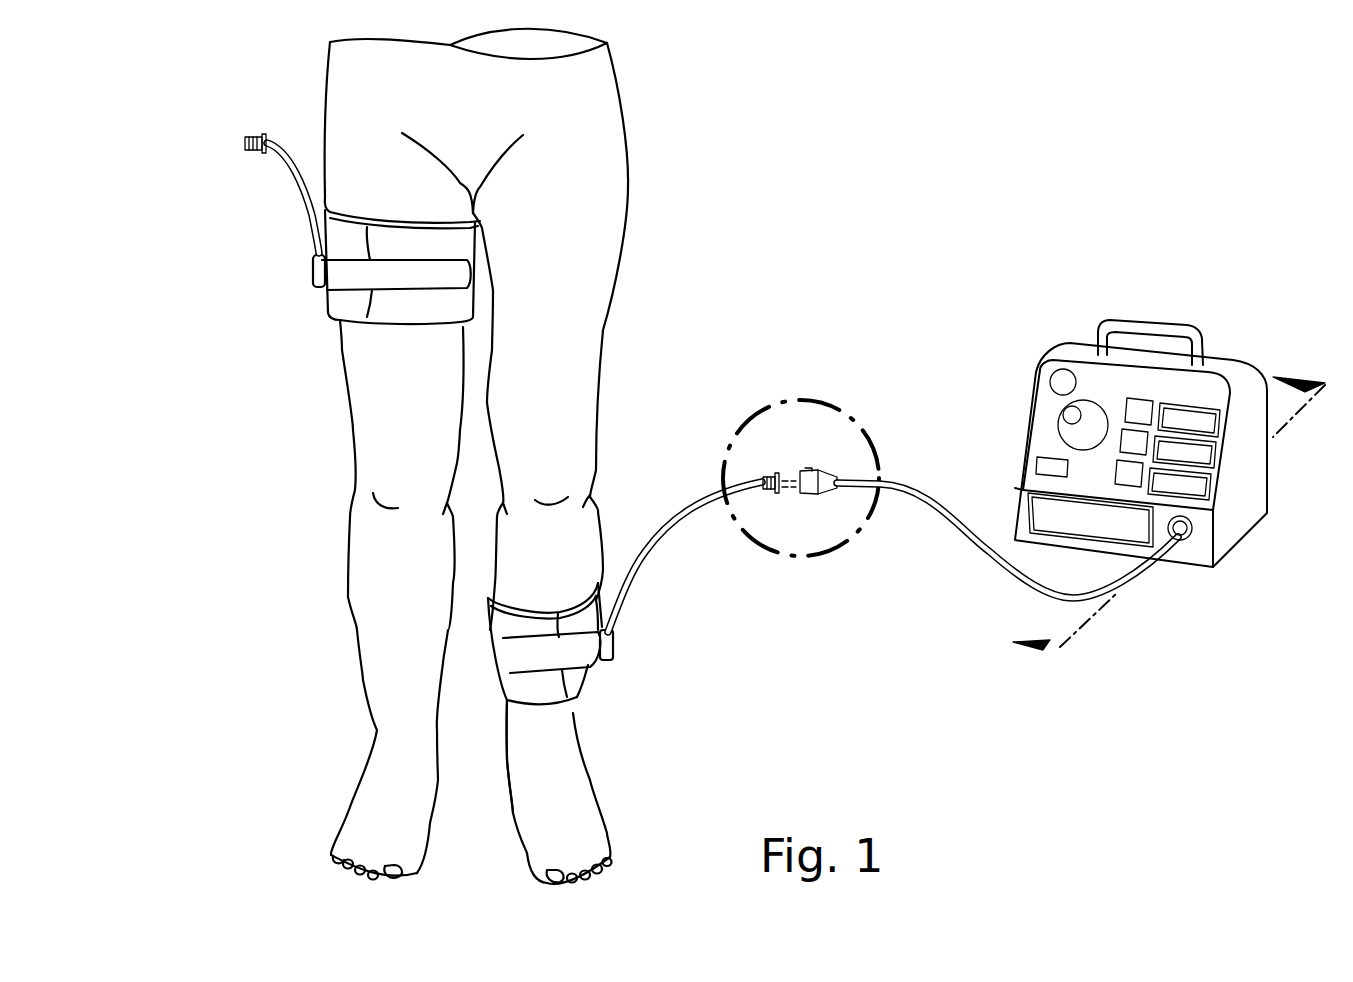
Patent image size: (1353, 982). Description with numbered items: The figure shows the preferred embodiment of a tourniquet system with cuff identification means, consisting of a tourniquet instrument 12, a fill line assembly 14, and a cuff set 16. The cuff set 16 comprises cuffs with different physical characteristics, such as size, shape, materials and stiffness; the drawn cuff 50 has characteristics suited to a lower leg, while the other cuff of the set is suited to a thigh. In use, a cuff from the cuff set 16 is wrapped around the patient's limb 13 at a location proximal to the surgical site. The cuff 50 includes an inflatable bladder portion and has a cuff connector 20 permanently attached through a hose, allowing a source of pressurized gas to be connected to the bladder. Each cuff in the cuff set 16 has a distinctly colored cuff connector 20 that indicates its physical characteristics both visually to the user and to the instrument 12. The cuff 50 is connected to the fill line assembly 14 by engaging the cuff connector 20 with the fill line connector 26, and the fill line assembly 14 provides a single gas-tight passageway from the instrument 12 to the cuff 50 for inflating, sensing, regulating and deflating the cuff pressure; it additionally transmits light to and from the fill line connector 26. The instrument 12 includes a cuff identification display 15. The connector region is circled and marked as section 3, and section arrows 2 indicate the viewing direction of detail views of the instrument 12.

The tourniquet instrument 12 is at (1097, 407).
The limb 13 is at (570, 728).
The fill line assembly 14 is at (973, 548).
The cuff identification display 15 is at (1023, 488).
The cuff set 16 is at (240, 132).
The cuff connector 20 is at (767, 470).
The fill line connector 26 is at (818, 470).
The cuff 50 is at (592, 677).
The section circle 3 is at (801, 489).
The section line 2 is at (1159, 515).